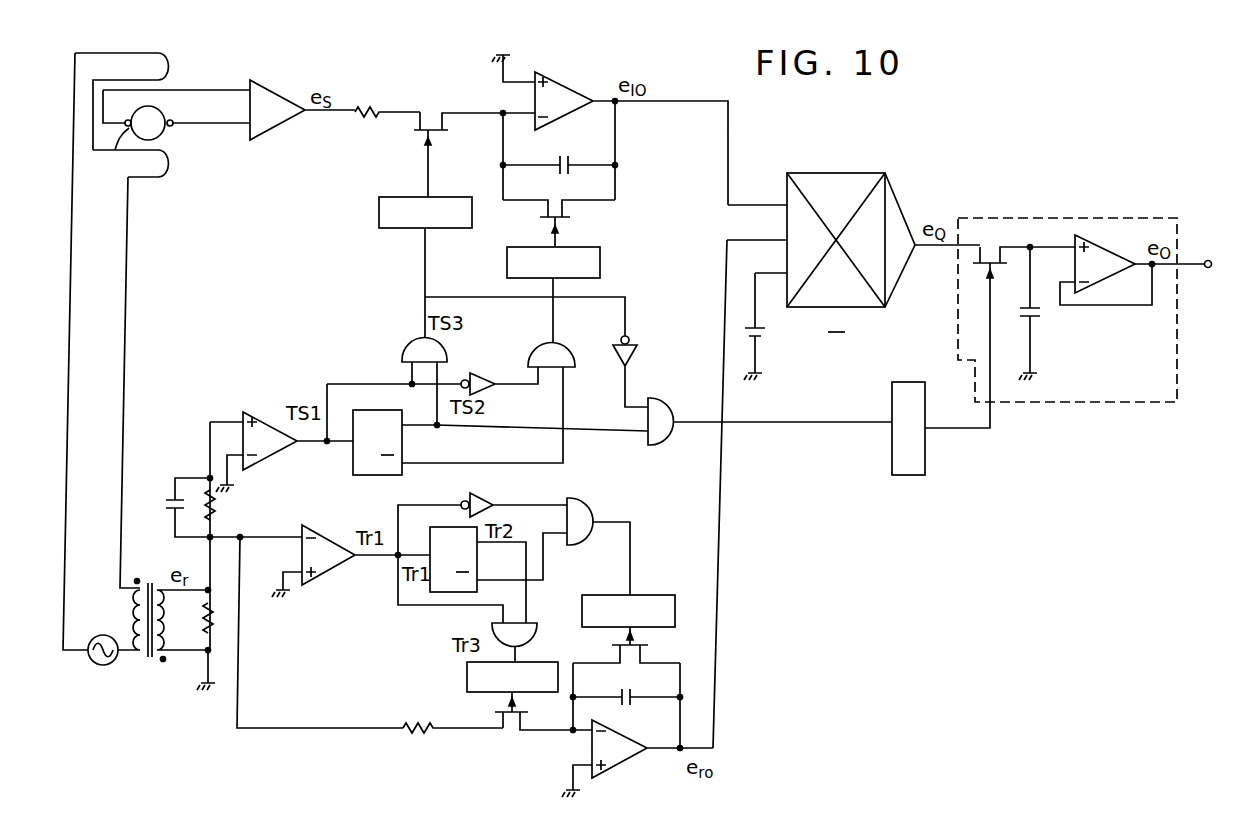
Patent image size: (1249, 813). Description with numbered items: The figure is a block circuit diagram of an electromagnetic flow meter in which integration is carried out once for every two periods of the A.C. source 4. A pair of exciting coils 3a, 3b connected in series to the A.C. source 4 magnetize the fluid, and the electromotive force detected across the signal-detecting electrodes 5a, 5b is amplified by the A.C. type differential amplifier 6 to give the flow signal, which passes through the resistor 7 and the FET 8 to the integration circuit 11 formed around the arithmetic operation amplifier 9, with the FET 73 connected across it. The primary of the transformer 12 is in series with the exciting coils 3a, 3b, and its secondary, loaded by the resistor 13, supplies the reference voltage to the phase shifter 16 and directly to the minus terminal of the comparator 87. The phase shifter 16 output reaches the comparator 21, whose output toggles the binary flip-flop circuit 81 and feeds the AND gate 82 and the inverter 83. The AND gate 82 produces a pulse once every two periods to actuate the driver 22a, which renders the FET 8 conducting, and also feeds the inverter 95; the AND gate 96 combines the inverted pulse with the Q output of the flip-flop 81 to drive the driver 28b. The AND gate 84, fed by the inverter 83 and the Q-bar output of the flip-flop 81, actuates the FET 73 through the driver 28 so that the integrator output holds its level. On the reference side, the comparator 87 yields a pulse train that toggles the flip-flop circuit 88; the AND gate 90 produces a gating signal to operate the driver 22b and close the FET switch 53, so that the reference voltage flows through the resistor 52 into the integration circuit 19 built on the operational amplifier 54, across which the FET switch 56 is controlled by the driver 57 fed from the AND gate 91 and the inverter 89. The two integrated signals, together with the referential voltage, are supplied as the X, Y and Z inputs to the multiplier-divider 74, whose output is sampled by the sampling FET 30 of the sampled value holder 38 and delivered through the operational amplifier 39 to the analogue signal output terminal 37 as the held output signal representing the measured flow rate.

The exciting coil 3a is at (176, 59).
The exciting coil 3b is at (170, 170).
The A.C. source 4 is at (103, 665).
The signal-detecting electrode 5a is at (166, 112).
The signal-detecting electrode 5b is at (113, 152).
The A.C. type differential amplifier 6 is at (268, 92).
The resistor 7 is at (368, 110).
The first switch (FET) 8 is at (426, 110).
The arithmetic operation amplifier 9 is at (565, 92).
The integration circuit 11 is at (556, 155).
The transformer 12 is at (151, 585).
The resistor 13 is at (198, 622).
The phase shifter 16 is at (204, 536).
The integration circuit (A.C.-D.C. converting circuit) 19 is at (655, 727).
The comparator 21 is at (266, 412).
The driver 22a is at (379, 208).
The driver 22b is at (467, 678).
The driver 28 is at (600, 262).
The driver 28b is at (925, 460).
The sampling FET 30 is at (990, 247).
The analogue signal output terminal 37 is at (1205, 270).
The sampled value holder 38 is at (1108, 394).
The operational amplifier 39 is at (1098, 246).
The resistor 52 is at (420, 738).
The FET switch 53 is at (508, 740).
The operational amplifier 54 is at (622, 765).
The FET switch 56 is at (648, 648).
The driver 57 is at (633, 580).
The FET 73 is at (568, 226).
The multiplier-divider 74 is at (845, 173).
The binary flip-flop circuit 81 is at (375, 476).
The AND gate 82 is at (404, 349).
The inverter 83 is at (485, 375).
The AND gate 84 is at (572, 358).
The comparator 87 is at (328, 566).
The flip-flop circuit 88 is at (430, 532).
The inverter 89 is at (475, 498).
The AND gate 90 is at (526, 625).
The AND gate 91 is at (580, 500).
The inverter 95 is at (637, 348).
The AND gate 96 is at (674, 408).